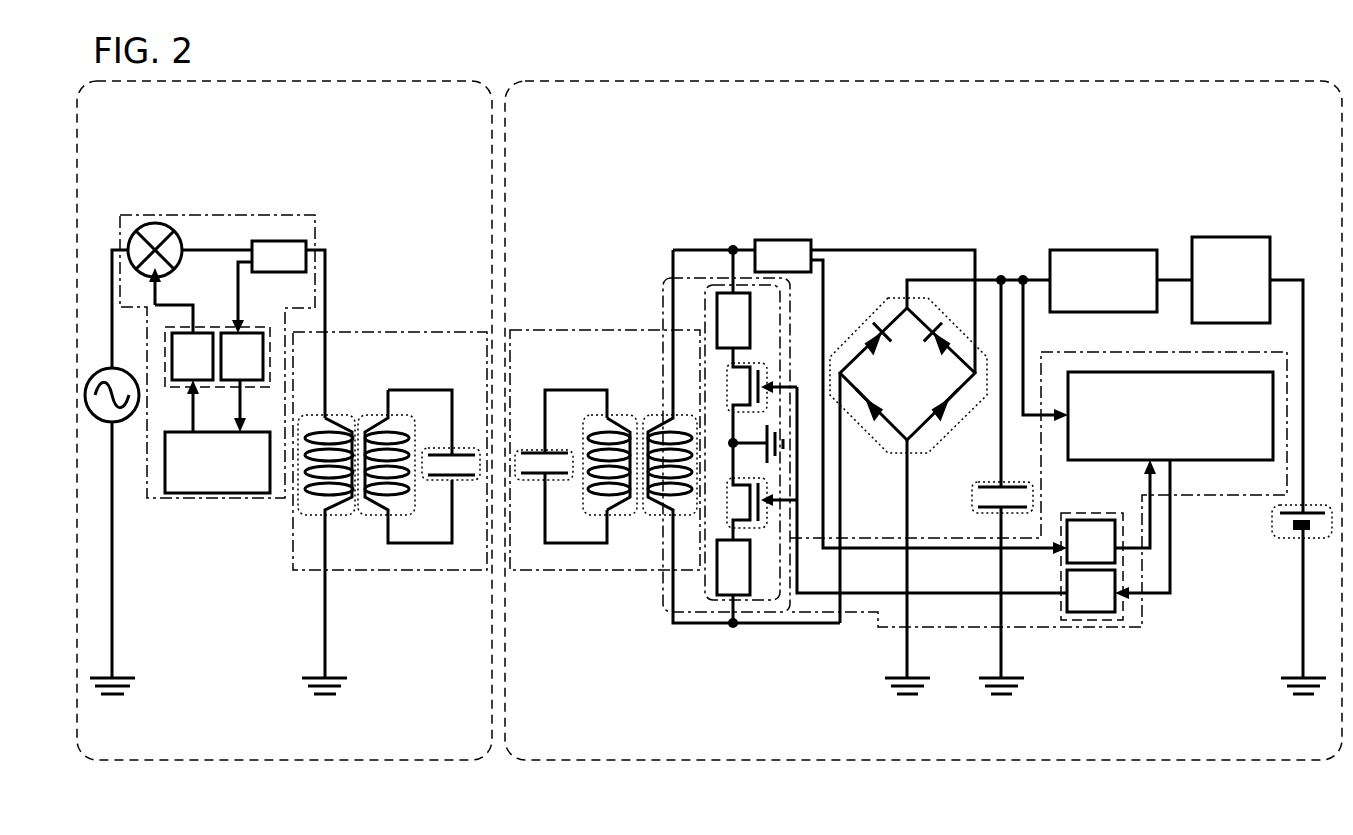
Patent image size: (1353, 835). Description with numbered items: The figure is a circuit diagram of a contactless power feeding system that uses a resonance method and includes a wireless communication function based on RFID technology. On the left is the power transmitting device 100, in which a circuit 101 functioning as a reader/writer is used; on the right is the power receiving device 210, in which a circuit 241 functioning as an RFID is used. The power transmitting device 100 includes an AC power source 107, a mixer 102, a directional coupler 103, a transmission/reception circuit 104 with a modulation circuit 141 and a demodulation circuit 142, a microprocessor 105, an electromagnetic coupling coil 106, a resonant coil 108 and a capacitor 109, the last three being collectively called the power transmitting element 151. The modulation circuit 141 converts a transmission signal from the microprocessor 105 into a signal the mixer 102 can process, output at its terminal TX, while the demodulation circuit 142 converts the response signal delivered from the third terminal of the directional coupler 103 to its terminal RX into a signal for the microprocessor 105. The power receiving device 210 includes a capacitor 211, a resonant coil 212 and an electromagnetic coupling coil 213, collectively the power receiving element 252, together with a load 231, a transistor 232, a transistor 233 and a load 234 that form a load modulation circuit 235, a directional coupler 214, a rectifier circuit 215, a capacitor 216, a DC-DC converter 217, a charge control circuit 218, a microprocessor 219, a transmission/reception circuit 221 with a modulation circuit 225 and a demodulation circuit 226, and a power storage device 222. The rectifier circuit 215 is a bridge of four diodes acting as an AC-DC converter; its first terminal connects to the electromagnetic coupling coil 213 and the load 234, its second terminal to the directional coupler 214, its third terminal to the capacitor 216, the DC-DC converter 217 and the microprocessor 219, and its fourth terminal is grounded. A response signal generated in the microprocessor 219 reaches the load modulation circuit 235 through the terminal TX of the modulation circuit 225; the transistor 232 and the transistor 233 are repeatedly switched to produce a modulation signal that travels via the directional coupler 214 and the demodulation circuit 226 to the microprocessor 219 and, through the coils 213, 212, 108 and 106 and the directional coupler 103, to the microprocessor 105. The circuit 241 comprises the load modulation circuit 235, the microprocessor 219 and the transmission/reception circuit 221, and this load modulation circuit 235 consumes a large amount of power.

The power transmitting device 100 is at (178, 740).
The circuit functioning as a reader/writer 101 is at (207, 215).
The mixer 102 is at (150, 223).
The directional coupler 103 is at (278, 329).
The transmission/reception circuit 104 is at (273, 330).
The microprocessor 105 is at (217, 462).
The electromagnetic coupling coil 106 is at (343, 412).
The AC power source 107 is at (122, 423).
The resonant coil 108 is at (382, 522).
The capacitor 109 is at (455, 482).
The modulation circuit 141 is at (192, 382).
The demodulation circuit 142 is at (242, 382).
The power transmitting element 151 is at (432, 572).
The power receiving device 210 is at (574, 740).
The capacitor 211 is at (523, 450).
The resonant coil 212 is at (617, 412).
The electromagnetic coupling coil 213 is at (648, 414).
The directional coupler 214 is at (911, 397).
The rectifier circuit 215 is at (858, 427).
The capacitor 216 is at (985, 482).
The DC-DC converter 217 is at (1121, 281).
The charge control circuit 218 is at (1247, 375).
The microprocessor 219 is at (1145, 367).
The transmission/reception circuit 221 is at (1098, 622).
The power storage device 222 is at (1283, 540).
The modulation circuit 225 is at (1118, 536).
The demodulation circuit 226 is at (1111, 511).
The load 231 is at (717, 310).
The transistor 232 is at (760, 363).
The transistor 233 is at (727, 515).
The load 234 is at (717, 580).
The load modulation circuit 235 is at (782, 612).
The circuit functioning as an RFID 241 is at (958, 627).
The power receiving element 252 is at (552, 572).